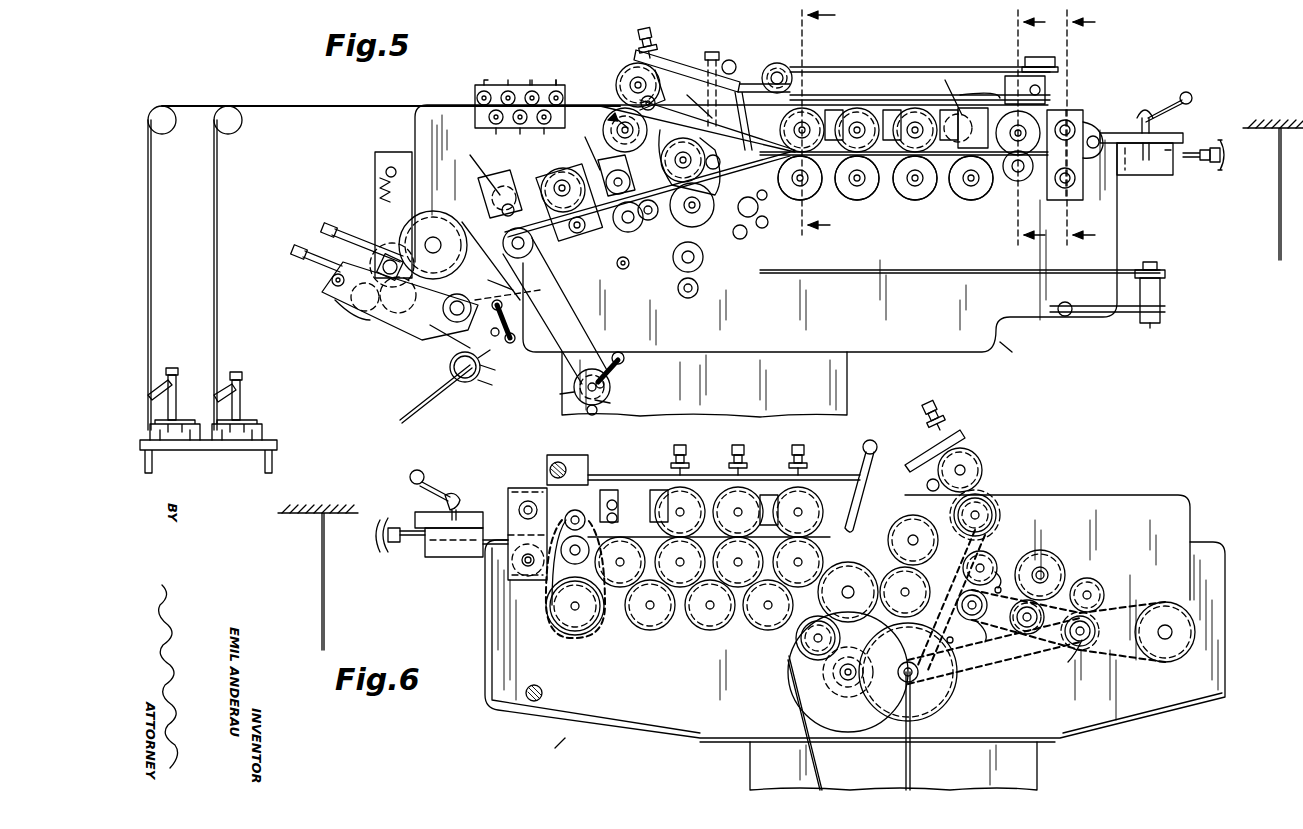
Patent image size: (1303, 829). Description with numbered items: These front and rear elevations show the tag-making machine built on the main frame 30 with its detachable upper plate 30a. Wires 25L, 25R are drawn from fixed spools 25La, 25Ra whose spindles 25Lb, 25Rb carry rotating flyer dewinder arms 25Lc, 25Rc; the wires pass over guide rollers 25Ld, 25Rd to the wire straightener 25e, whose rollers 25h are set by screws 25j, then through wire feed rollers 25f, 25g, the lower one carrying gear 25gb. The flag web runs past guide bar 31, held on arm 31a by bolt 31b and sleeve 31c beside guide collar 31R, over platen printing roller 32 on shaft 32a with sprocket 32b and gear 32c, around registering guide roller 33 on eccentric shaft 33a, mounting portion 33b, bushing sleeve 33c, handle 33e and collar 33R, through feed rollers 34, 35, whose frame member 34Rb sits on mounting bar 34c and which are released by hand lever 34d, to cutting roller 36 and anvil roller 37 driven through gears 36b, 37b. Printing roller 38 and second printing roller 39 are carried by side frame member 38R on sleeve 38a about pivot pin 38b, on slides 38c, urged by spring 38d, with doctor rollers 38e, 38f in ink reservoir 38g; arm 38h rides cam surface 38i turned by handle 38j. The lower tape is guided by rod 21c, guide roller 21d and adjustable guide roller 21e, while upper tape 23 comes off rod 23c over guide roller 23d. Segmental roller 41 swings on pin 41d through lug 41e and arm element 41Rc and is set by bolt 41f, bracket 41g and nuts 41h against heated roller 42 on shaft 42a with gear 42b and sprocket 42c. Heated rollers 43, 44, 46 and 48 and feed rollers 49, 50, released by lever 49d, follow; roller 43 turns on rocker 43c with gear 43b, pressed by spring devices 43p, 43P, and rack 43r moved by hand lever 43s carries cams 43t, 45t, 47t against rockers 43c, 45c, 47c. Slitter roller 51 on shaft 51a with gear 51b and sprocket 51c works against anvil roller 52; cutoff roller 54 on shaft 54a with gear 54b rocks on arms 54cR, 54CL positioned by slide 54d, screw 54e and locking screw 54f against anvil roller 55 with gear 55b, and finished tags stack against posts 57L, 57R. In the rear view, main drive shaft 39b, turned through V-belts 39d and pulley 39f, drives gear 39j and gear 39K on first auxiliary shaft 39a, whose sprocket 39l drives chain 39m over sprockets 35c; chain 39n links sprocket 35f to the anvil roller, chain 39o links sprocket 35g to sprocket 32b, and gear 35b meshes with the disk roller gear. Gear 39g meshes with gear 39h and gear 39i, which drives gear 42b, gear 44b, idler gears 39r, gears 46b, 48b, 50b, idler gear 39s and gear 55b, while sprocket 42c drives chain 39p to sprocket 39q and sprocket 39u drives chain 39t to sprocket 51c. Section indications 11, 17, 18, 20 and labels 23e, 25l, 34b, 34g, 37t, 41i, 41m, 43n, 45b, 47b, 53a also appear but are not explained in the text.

In FIG. 5, the section line 11 is at (648, 288).
In FIG. 5, the section line 17 is at (818, 126).
In FIG. 5, the section line 18 is at (1031, 130).
In FIG. 5, the section line 20 is at (1081, 129).
In FIG. 5, the pivot 21c is at (1068, 316).
In FIG. 6, the pivot 21c is at (540, 685).
In FIG. 5, the cylinder 21d is at (1160, 265).
In FIG. 5, the pulley 21e is at (696, 245).
In FIG. 5, the top rail 23 is at (1000, 62).
In FIG. 6, the pivot pin 23c is at (565, 465).
In FIG. 5, the rail bracket 23d is at (1050, 62).
In FIG. 5, the rail pulley 23e is at (785, 65).
In FIG. 5, the guide rollers 25e is at (492, 92).
In FIG. 5, the pulley 25f is at (616, 82).
In FIG. 5, the small pulley 25g is at (640, 105).
In FIG. 5, the guide box 25h is at (475, 98).
In FIG. 5, the roller pins 25j is at (532, 80).
In FIG. 5, the bracket 25l is at (625, 65).
In FIG. 5, the left web 25L is at (150, 285).
In FIG. 5, the right web 25R is at (216, 285).
In FIG. 5, the spool stand 25La is at (172, 450).
In FIG. 5, the right spool 25Ra is at (255, 420).
In FIG. 5, the left spool post 25Lb is at (170, 368).
In FIG. 6, the left spool post 25Lb is at (968, 450).
In FIG. 5, the right spool post 25Rb is at (242, 375).
In FIG. 5, the left brake arm 25Lc is at (158, 380).
In FIG. 5, the right brake arm 25Rc is at (225, 385).
In FIG. 5, the left guide pulley 25Ld is at (190, 90).
In FIG. 5, the right guide pulley 25Rd is at (227, 112).
In FIG. 6, the sprocket 25gb is at (996, 518).
In FIG. 5, the frame 30 is at (1014, 350).
In FIG. 6, the frame 30 is at (554, 748).
In FIG. 5, the frame top 30a is at (980, 84).
In FIG. 6, the frame top 30a is at (633, 462).
In FIG. 5, the roller 31 is at (457, 365).
In FIG. 5, the arm 31a is at (502, 368).
In FIG. 5, the arm 31b is at (501, 355).
In FIG. 5, the pivot 31c is at (487, 341).
In FIG. 5, the roller arm 31R is at (500, 385).
In FIG. 5, the drum 32 is at (435, 212).
In FIG. 5, the drum hub 32a is at (445, 228).
In FIG. 6, the drum hub 32a is at (1175, 617).
In FIG. 6, the drum shaft 32b is at (1160, 657).
In FIG. 5, the pulley 32c is at (548, 228).
In FIG. 5, the pulley 33 is at (608, 392).
In FIG. 5, the arm 33a is at (619, 405).
In FIG. 5, the pin 33b is at (606, 382).
In FIG. 5, the pivot 33c is at (586, 410).
In FIG. 5, the lever 33e is at (620, 365).
In FIG. 5, the roller 33R is at (552, 393).
In FIG. 5, the clamp block 34 is at (538, 178).
In FIG. 6, the gear 34b is at (1090, 565).
In FIG. 5, the roller 34c is at (492, 205).
In FIG. 6, the roller 34c is at (1010, 555).
In FIG. 5, the lever 34d is at (487, 170).
In FIG. 5, the lever 34g is at (578, 147).
In FIG. 5, the block 34Rb is at (484, 194).
In FIG. 5, the roller 35 is at (615, 225).
In FIG. 6, the arm 35b is at (1023, 646).
In FIG. 6, the sprocket 35c is at (1082, 605).
In FIG. 6, the sprocket 35f is at (1098, 625).
In FIG. 6, the sprocket 35g is at (1095, 635).
In FIG. 5, the pulley 36 is at (553, 168).
In FIG. 6, the gear 36b is at (1048, 555).
In FIG. 5, the pin 37 is at (613, 256).
In FIG. 6, the sprocket 37b is at (1010, 620).
In FIG. 6, the hub 37t is at (1039, 581).
In FIG. 5, the lever mechanism 38 is at (390, 253).
In FIG. 5, the roller 38a is at (468, 302).
In FIG. 5, the link 38b is at (449, 337).
In FIG. 5, the cam 38c is at (404, 265).
In FIG. 5, the spring 38d is at (378, 182).
In FIG. 5, the adjusting screws 38e is at (330, 280).
In FIG. 5, the cam followers 38f is at (383, 295).
In FIG. 5, the arm 38g is at (340, 312).
In FIG. 5, the link 38h is at (484, 279).
In FIG. 5, the link 38i is at (520, 292).
In FIG. 5, the link 38j is at (512, 322).
In FIG. 5, the plate 38R is at (400, 332).
In FIG. 5, the panel 39 is at (395, 208).
In FIG. 6, the sprocket 39a is at (915, 665).
In FIG. 6, the hub 39b is at (848, 680).
In FIG. 6, the rod 39d is at (912, 757).
In FIG. 6, the disc 39f is at (795, 670).
In FIG. 6, the gear 39g is at (833, 638).
In FIG. 6, the gear 39h is at (760, 625).
In FIG. 6, the gear 39i is at (850, 562).
In FIG. 6, the hub 39j is at (838, 672).
In FIG. 6, the cam 39K is at (940, 705).
In FIG. 6, the disc 39l is at (915, 680).
In FIG. 6, the chain 39m is at (1005, 662).
In FIG. 6, the chain 39n is at (1026, 624).
In FIG. 6, the chain 39o is at (1120, 655).
In FIG. 6, the sprocket 39p is at (992, 512).
In FIG. 6, the sprocket 39q is at (990, 492).
In FIG. 6, the gear 39r is at (700, 640).
In FIG. 6, the chain 39s is at (590, 645).
In FIG. 6, the chain 39t is at (548, 620).
In FIG. 6, the sprocket 39u is at (550, 600).
In FIG. 5, the pulley 41 is at (647, 128).
In FIG. 5, the pulley 41d is at (705, 158).
In FIG. 5, the pulley 41e is at (692, 205).
In FIG. 5, the bolt 41f is at (726, 98).
In FIG. 5, the lever bar 41g is at (690, 62).
In FIG. 5, the bar 41h is at (730, 75).
In FIG. 5, the link 41i is at (692, 106).
In FIG. 6, the gear 41m is at (915, 515).
In FIG. 5, the roller 41Rc is at (732, 186).
In FIG. 5, the pin 42 is at (735, 225).
In FIG. 6, the sprocket 42a is at (905, 567).
In FIG. 6, the sprocket 42b is at (963, 596).
In FIG. 6, the pin 42c is at (939, 629).
In FIG. 5, the roller mount 43 is at (873, 113).
In FIG. 6, the gear 43b is at (805, 495).
In FIG. 5, the upper roller 43c is at (806, 95).
In FIG. 5, the pin 43n is at (762, 183).
In FIG. 5, the bolt 43p is at (645, 45).
In FIG. 6, the bolt 43p is at (770, 445).
In FIG. 6, the bolt 43P is at (958, 425).
In FIG. 5, the pin 43r is at (764, 215).
In FIG. 5, the lever 43s is at (737, 60).
In FIG. 6, the lever 43s is at (875, 486).
In FIG. 5, the lower roller 43t is at (857, 176).
In FIG. 5, the roller 44 is at (785, 190).
In FIG. 6, the gear 44b is at (798, 562).
In FIG. 6, the gear 45b is at (730, 498).
In FIG. 5, the upper roller 45c is at (862, 120).
In FIG. 5, the lower roller 45t is at (800, 177).
In FIG. 5, the roller 46 is at (850, 195).
In FIG. 6, the gear 46b is at (738, 562).
In FIG. 6, the gear 47b is at (660, 495).
In FIG. 5, the upper roller 47c is at (925, 115).
In FIG. 5, the lower roller 47t is at (966, 183).
In FIG. 5, the roller 48 is at (912, 200).
In FIG. 6, the gear 48b is at (680, 562).
In FIG. 5, the block 49 is at (985, 118).
In FIG. 5, the lever 49d is at (951, 80).
In FIG. 5, the roller 50 is at (965, 200).
In FIG. 6, the gear 50b is at (620, 562).
In FIG. 5, the pulley 51 is at (1018, 120).
In FIG. 6, the pin 51a is at (608, 503).
In FIG. 6, the bracket 51b is at (688, 510).
In FIG. 6, the pin 51c is at (610, 517).
In FIG. 5, the pulley 52 is at (1010, 172).
In FIG. 6, the shaft 53a is at (510, 583).
In FIG. 5, the housing 54 is at (1095, 128).
In FIG. 6, the bearing 54a is at (520, 508).
In FIG. 6, the gear box 54b is at (530, 488).
In FIG. 5, the right gear box 54cR is at (1095, 100).
In FIG. 6, the left clutch box 54CL is at (454, 542).
In FIG. 6, the bracket 54d is at (438, 520).
In FIG. 5, the hand wheel 54e is at (1198, 162).
In FIG. 6, the hand wheel 54e is at (405, 540).
In FIG. 5, the handle 54f is at (1168, 95).
In FIG. 6, the handle 54f is at (462, 490).
In FIG. 5, the housing 55 is at (1085, 180).
In FIG. 6, the shaft 55b is at (512, 558).
In FIG. 6, the left support 57L is at (323, 580).
In FIG. 5, the right support 57R is at (1278, 205).